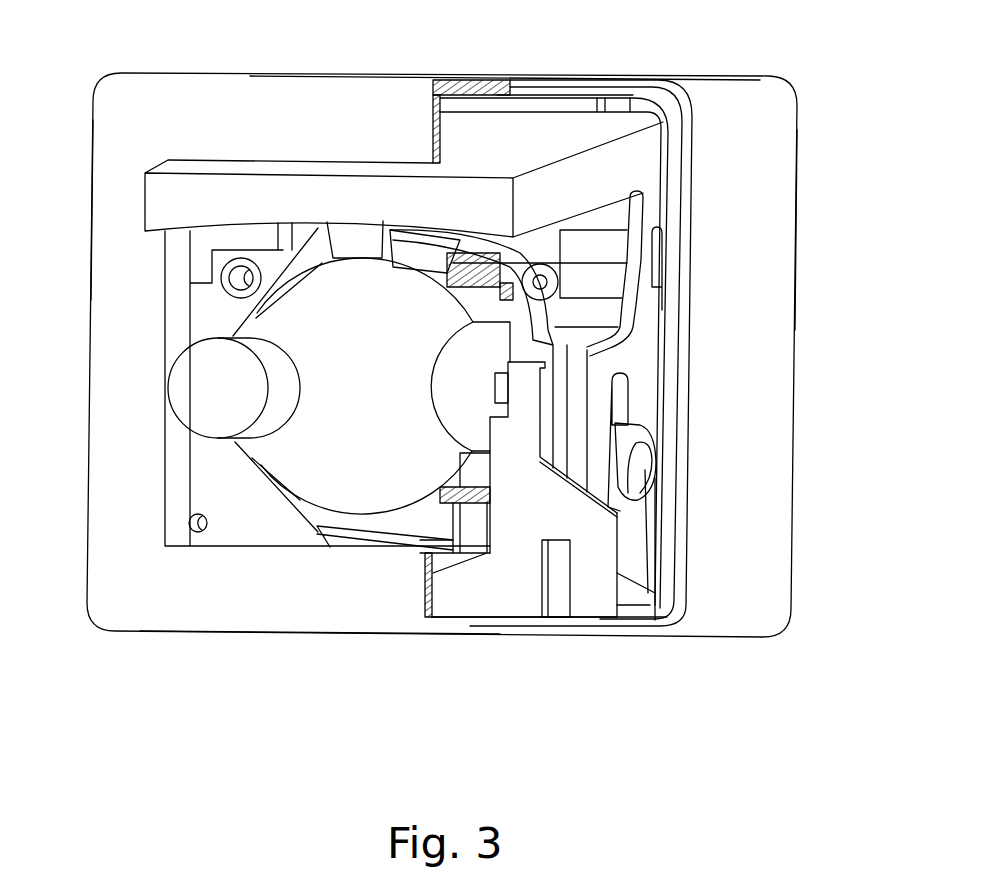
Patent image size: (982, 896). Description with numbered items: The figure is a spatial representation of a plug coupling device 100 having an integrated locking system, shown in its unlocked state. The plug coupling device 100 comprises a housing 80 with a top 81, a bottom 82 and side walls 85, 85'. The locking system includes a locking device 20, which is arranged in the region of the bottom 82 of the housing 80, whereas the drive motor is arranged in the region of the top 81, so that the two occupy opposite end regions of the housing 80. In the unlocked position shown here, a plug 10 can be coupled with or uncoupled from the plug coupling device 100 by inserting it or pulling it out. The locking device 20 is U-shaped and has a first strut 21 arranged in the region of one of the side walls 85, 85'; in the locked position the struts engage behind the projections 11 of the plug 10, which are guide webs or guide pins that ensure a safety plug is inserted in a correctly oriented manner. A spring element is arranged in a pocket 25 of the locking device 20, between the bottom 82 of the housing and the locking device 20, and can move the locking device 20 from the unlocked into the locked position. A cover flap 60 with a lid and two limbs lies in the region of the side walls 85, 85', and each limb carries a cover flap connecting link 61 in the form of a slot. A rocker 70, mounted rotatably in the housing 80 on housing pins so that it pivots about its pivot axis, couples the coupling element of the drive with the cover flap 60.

The plug 10 is at (360, 495).
The projections 11 is at (498, 397).
The locking device 20 is at (597, 583).
The first strut 21 is at (532, 417).
The pocket 25 is at (560, 595).
The cover flap 60 is at (533, 127).
The cover flap connecting link 61 is at (620, 405).
The rocker 70 is at (649, 474).
The housing 80 is at (173, 603).
The top 81 is at (243, 72).
The bottom 82 is at (257, 630).
The side wall 85 is at (69, 209).
The side wall 85' is at (840, 227).
The plug coupling device 100 is at (727, 34).